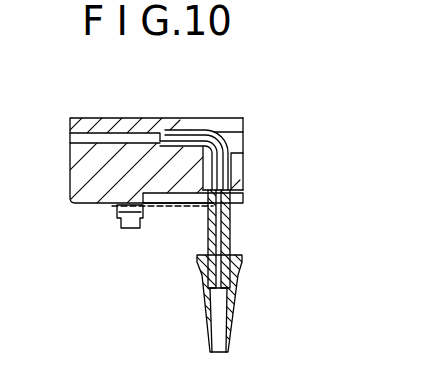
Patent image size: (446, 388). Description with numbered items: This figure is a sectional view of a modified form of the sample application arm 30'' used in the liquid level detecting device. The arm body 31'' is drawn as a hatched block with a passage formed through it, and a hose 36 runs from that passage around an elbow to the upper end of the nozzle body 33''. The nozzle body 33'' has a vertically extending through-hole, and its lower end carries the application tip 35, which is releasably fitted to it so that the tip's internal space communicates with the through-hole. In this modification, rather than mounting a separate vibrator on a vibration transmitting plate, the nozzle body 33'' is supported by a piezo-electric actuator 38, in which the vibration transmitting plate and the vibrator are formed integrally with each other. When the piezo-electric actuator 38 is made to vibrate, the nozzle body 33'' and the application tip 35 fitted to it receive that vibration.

The sample application arm 30'' is at (193, 210).
The arm body 31'' is at (180, 210).
The nozzle body 33'' is at (249, 255).
The application tip 35 is at (238, 318).
The hose 36 is at (207, 118).
The piezo-electric actuator 38 is at (172, 206).